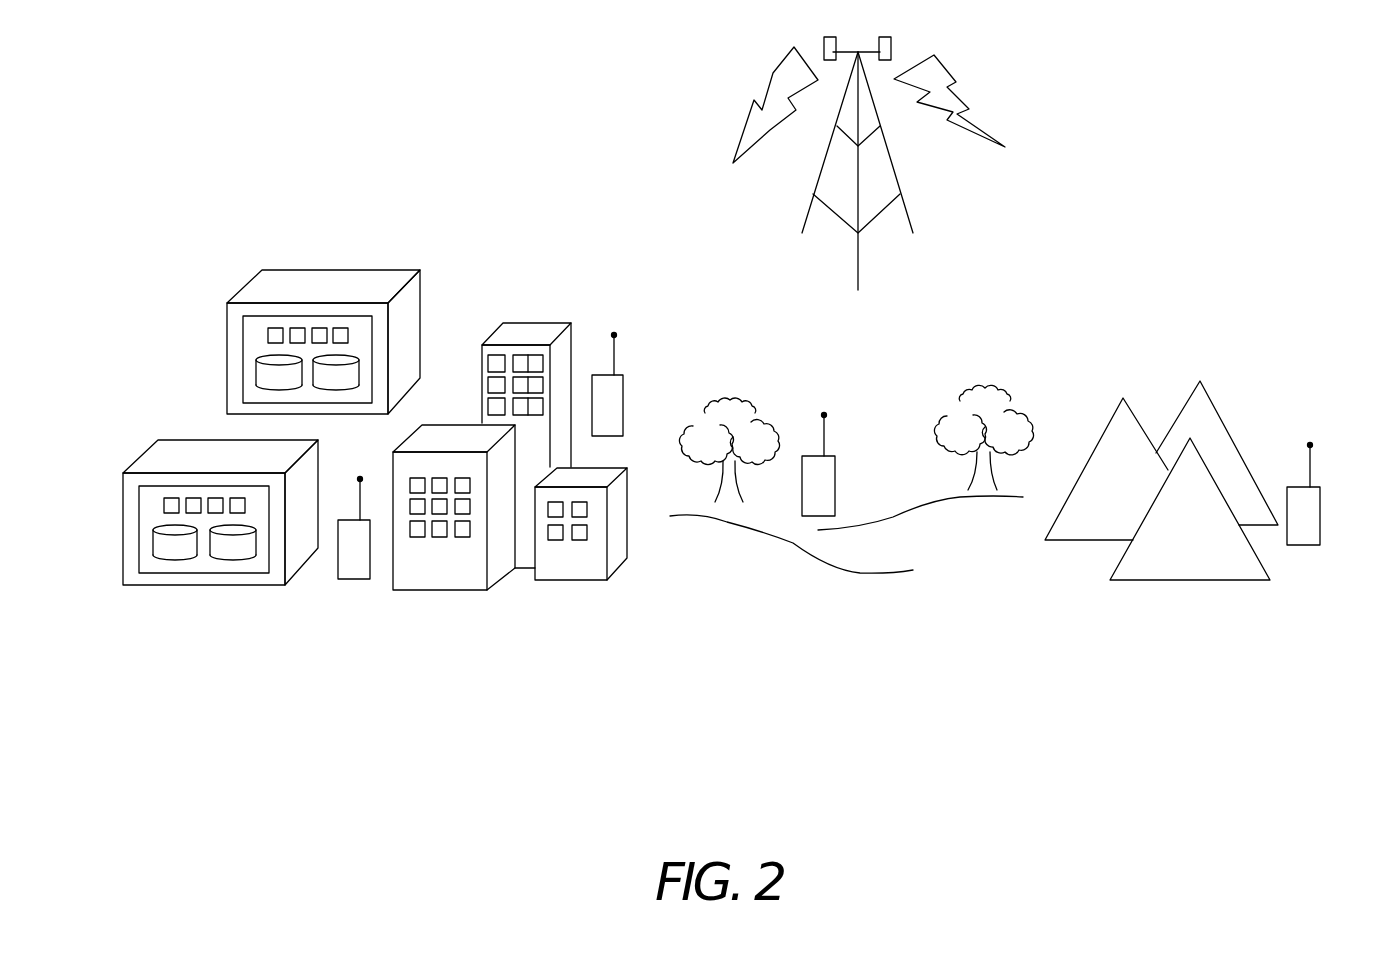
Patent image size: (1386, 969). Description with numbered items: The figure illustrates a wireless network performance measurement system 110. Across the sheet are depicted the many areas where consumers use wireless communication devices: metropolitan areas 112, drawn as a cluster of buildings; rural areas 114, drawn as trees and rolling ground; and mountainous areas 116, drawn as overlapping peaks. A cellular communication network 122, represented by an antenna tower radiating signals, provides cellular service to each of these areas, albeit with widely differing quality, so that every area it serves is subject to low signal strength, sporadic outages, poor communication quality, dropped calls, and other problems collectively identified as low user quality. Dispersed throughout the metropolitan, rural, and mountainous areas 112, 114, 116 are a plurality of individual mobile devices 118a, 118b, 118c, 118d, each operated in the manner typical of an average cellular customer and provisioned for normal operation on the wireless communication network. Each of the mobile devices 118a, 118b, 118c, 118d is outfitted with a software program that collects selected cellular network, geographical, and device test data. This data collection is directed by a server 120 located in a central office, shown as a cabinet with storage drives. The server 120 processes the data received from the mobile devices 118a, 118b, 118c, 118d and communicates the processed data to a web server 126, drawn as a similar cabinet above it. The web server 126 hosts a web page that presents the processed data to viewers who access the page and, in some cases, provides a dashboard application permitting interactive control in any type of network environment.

The wireless network performance measurement system 110 is at (1102, 748).
The metropolitan areas 112 is at (495, 644).
The rural areas 114 is at (862, 632).
The mountainous areas 116 is at (1207, 621).
The mobile device 118a is at (355, 580).
The mobile device 118b is at (625, 407).
The mobile device 118c is at (837, 485).
The mobile device 118d is at (1303, 547).
The server 120 is at (205, 562).
The cellular communication network 122 is at (880, 215).
The web server 126 is at (253, 348).